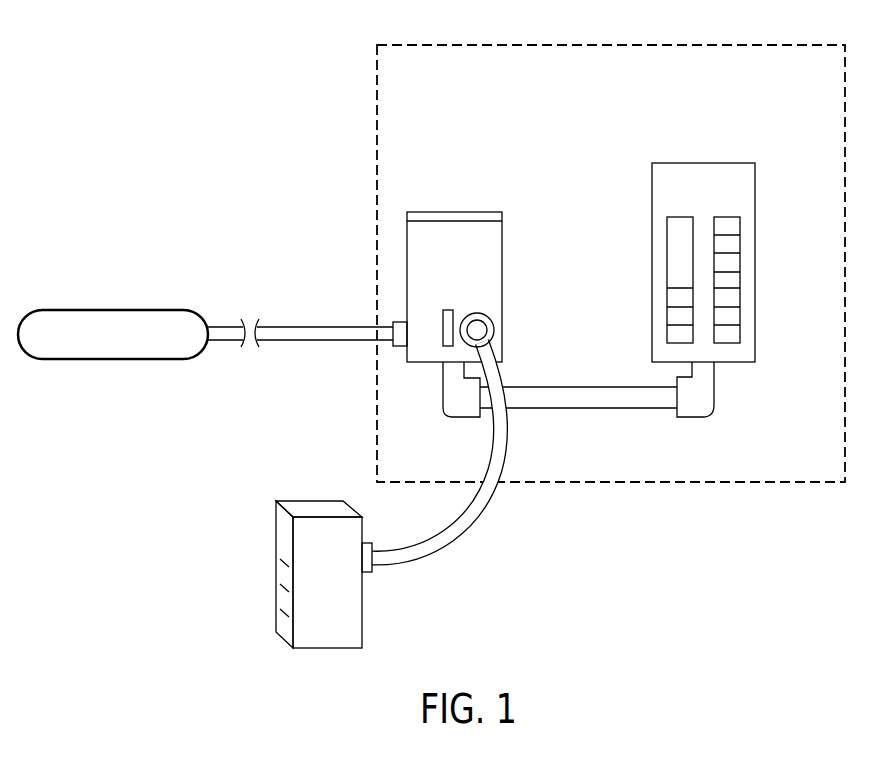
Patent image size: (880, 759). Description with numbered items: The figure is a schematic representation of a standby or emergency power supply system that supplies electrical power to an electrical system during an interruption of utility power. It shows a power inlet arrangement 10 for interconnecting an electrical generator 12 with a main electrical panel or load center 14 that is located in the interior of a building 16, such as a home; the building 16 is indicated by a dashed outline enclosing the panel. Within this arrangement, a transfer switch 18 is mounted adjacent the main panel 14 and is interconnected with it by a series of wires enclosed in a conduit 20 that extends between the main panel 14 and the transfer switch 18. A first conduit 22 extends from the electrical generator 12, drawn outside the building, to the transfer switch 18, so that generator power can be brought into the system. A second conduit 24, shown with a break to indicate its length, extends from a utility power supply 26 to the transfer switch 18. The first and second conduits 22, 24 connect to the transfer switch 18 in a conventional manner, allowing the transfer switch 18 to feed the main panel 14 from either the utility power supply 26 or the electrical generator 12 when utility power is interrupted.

The power inlet arrangement 10 is at (196, 100).
The electrical generator 12 is at (305, 532).
The main electrical panel 14 is at (703, 163).
The building 16 is at (731, 483).
The transfer switch 18 is at (455, 212).
The conduit 20 is at (583, 408).
The first conduit 22 is at (400, 566).
The second conduit 24 is at (284, 333).
The utility power supply 26 is at (113, 310).